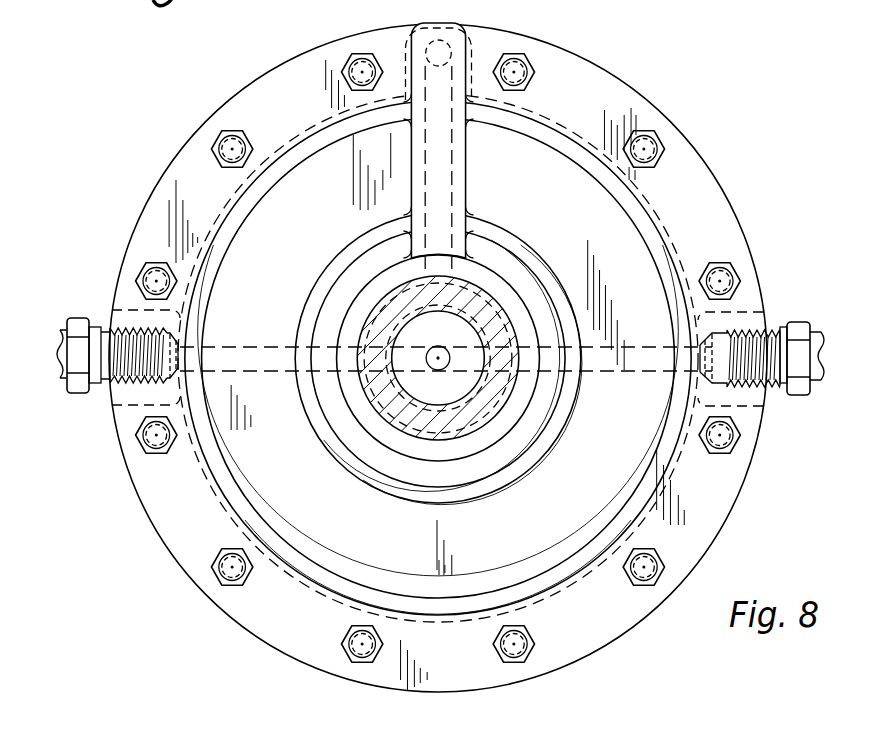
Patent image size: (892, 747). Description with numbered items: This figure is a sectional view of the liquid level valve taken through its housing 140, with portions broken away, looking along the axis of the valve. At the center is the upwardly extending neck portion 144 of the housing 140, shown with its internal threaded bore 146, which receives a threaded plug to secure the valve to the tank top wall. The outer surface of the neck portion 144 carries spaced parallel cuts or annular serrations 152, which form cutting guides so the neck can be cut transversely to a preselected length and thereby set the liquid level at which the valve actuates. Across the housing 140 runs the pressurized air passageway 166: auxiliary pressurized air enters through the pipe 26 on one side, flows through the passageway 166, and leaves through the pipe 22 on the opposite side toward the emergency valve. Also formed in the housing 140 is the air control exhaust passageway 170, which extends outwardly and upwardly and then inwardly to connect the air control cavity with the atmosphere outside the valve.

The housing 140 is at (748, 234).
The pressurized air passageway 166 is at (257, 344).
The air control exhaust passageway 170 is at (460, 30).
The neck portion 144 is at (387, 292).
The internal threaded bore 146 is at (400, 393).
The annular serrations 152 is at (393, 414).
The pipe 26 is at (82, 318).
The pipe 22 is at (803, 322).